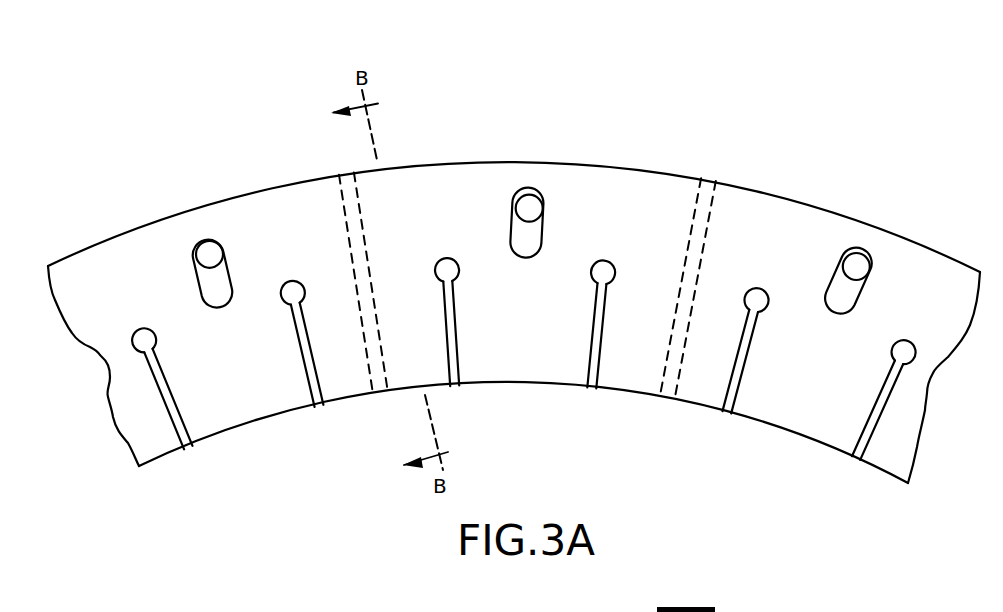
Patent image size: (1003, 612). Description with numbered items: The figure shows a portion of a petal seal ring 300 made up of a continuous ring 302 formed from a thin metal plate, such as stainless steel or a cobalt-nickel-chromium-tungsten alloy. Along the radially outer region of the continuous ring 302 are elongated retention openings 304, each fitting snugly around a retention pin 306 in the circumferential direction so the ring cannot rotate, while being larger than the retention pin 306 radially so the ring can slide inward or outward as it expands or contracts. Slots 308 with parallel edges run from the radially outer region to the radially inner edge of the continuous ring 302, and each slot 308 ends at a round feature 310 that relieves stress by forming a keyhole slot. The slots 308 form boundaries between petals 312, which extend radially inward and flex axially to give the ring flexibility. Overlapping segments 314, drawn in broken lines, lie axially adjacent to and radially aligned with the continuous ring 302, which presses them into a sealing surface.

The seal ring 300 is at (502, 258).
The continuous ring 302 is at (437, 193).
The retention opening 304 is at (200, 238).
The retention pin 306 is at (212, 253).
The slot 308 is at (305, 383).
The round feature 310 is at (293, 280).
The petal 312 is at (713, 390).
The overlapping segment 314 is at (347, 174).